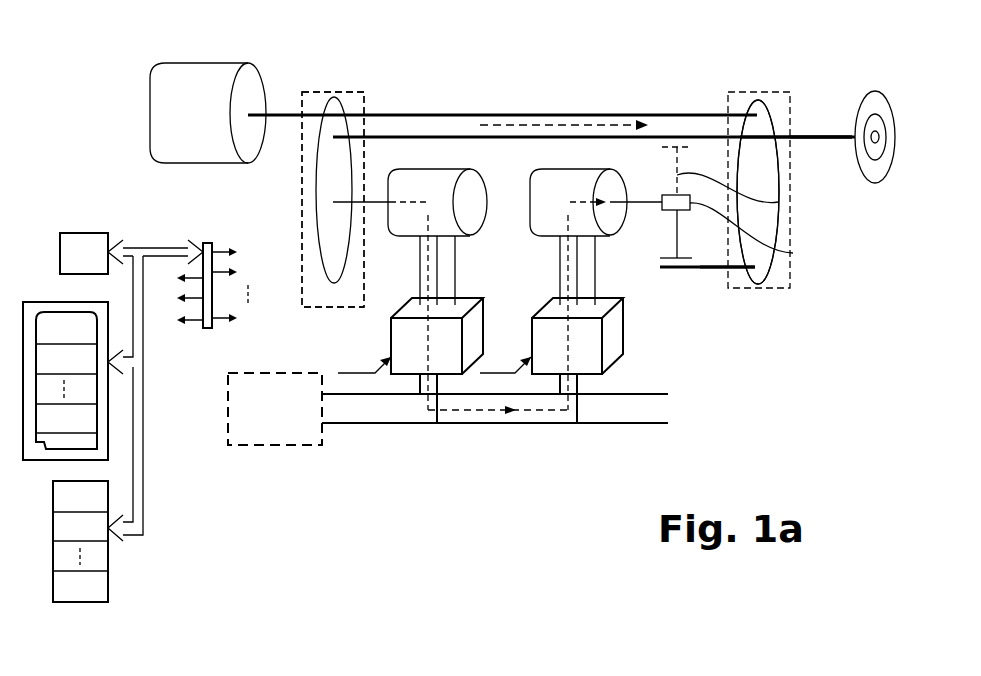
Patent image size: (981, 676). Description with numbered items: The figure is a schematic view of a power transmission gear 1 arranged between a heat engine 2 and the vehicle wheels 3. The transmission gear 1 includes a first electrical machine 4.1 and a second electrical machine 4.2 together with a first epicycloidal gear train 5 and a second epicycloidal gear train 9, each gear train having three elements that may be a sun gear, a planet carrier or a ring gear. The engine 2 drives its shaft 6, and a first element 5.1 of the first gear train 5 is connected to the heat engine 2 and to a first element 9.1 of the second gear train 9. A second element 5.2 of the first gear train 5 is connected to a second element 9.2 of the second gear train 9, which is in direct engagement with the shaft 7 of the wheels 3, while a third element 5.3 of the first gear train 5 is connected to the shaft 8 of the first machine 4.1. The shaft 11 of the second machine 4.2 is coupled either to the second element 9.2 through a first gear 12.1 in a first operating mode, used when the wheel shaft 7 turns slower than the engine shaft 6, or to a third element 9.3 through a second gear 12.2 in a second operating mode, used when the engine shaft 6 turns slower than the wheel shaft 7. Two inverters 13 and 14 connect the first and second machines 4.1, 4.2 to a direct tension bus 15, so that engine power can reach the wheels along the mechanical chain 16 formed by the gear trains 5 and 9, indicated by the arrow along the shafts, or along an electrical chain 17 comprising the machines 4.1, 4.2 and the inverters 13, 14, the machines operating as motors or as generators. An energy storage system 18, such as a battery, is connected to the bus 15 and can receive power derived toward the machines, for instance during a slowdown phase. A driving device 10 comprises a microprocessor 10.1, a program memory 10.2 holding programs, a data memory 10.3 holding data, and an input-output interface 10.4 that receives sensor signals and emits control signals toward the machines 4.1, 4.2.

The power transmission gear 1 is at (337, 66).
The heat engine 2 is at (196, 73).
The vehicle wheels 3 is at (879, 93).
The first electrical machine 4.1 is at (478, 213).
The second electrical machine 4.2 is at (571, 175).
The first epicycloidal gear train 5 is at (322, 307).
The first element of the first gear train 5.1 is at (304, 112).
The second element of the first gear train 5.2 is at (368, 135).
The third element of the first gear train 5.3 is at (352, 183).
The shaft of the engine 6 is at (283, 125).
The shaft of the wheels 7 is at (837, 135).
The shaft of the first machine 8 is at (380, 210).
The second epicycloidal gear train 9 is at (790, 93).
The first element of the second gear train 9.1 is at (727, 113).
The second element of the second gear train 9.2 is at (727, 136).
The third element of the second gear train 9.3 is at (725, 268).
The driving device 10 is at (117, 192).
The microprocessor 10.1 is at (77, 233).
The program memory 10.2 is at (108, 421).
The data memory 10.3 is at (85, 603).
The input-output interface 10.4 is at (208, 243).
The shaft of the second machine 11 is at (648, 195).
The first gear 12.1 is at (778, 202).
The second gear 12.2 is at (665, 235).
The first inverter 13 is at (391, 334).
The second inverter 14 is at (615, 336).
The direct tension bus 15 is at (515, 425).
The torque flow 16 is at (560, 125).
The electrical chain 17 is at (568, 331).
The energy storage system 18 is at (295, 446).